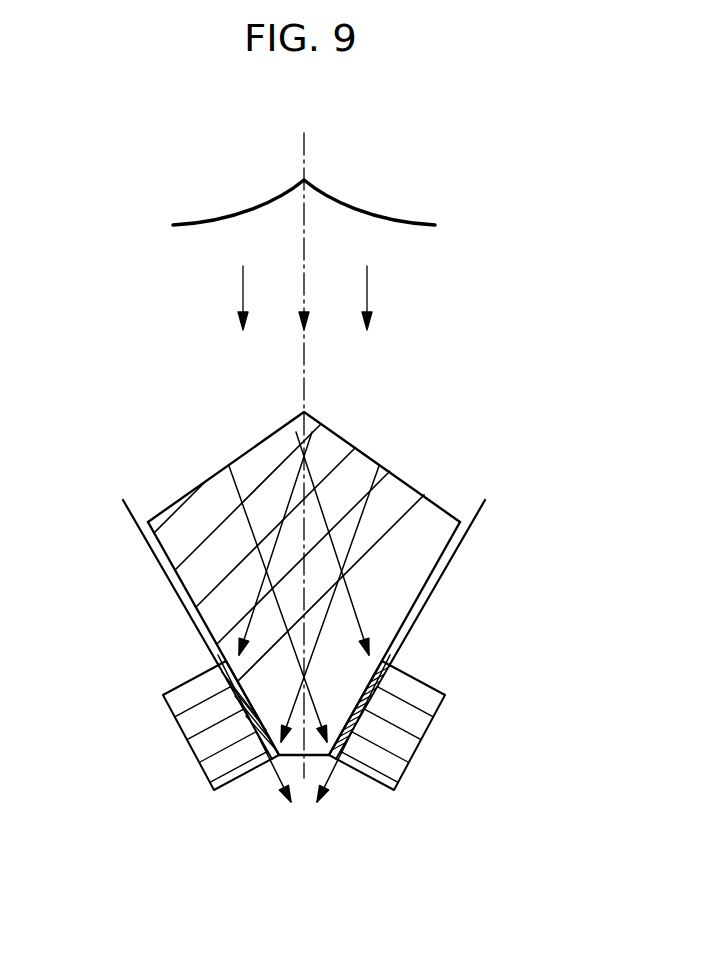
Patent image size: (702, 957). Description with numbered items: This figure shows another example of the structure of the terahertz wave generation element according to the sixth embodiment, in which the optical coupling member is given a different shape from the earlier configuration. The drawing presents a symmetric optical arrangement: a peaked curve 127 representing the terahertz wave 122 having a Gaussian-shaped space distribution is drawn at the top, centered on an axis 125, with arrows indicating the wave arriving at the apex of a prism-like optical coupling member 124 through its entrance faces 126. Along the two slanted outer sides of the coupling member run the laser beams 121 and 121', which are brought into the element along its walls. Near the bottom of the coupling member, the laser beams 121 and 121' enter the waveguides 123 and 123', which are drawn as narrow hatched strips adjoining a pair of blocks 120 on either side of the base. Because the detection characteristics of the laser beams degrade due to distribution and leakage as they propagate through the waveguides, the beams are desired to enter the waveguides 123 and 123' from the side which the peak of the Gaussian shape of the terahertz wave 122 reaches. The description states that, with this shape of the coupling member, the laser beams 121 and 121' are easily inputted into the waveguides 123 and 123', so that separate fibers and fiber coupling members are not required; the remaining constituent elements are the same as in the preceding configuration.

The detector block 120 is at (424, 714).
The laser beam 121 is at (163, 583).
The laser beam 121' is at (470, 583).
The incident light 122 is at (241, 282).
The waveguide 123 is at (440, 703).
The waveguide 123' is at (166, 711).
The prism body 124 is at (424, 564).
The optical axis 125 is at (303, 162).
The entrance face 126 is at (373, 450).
The intensity distribution curve 127 is at (380, 211).